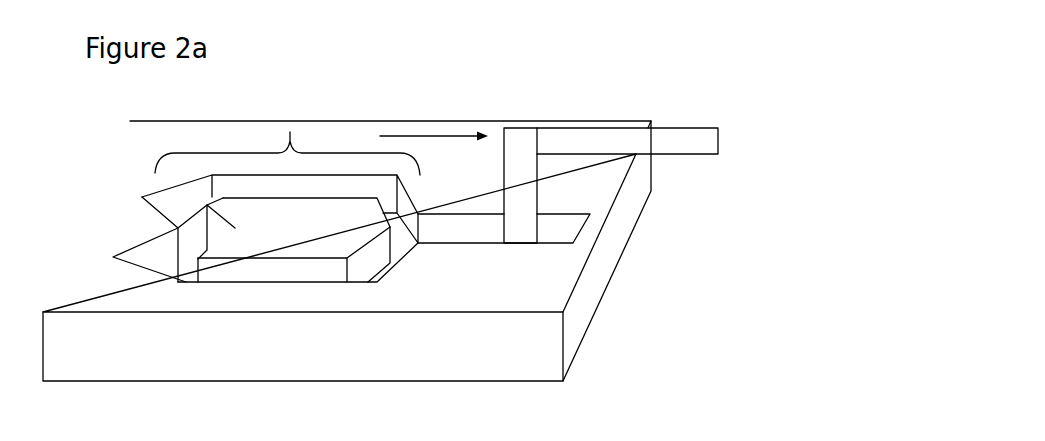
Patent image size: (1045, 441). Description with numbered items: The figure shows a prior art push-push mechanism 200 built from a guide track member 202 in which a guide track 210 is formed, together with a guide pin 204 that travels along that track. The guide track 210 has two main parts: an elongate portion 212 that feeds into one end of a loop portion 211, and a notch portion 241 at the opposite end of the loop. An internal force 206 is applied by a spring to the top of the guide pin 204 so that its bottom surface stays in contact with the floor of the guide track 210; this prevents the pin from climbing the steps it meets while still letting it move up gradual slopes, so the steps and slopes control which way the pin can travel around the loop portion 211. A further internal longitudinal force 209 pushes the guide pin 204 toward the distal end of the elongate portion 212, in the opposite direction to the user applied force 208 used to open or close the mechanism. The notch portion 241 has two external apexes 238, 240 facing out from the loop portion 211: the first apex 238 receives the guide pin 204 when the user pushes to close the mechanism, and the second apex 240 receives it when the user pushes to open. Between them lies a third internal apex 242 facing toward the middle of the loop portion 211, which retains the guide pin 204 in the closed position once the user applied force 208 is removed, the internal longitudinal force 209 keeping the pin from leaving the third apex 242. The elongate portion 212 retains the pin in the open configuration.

The push-push mechanism 200 is at (572, 90).
The guide track member 202 is at (607, 288).
The guide pin 204 is at (683, 145).
The internal force 206 is at (685, 104).
The user applied force 208 is at (825, 140).
The internal longitudinal force 209 is at (420, 135).
The guide track 210 is at (312, 268).
The loop portion 211 is at (290, 130).
The elongate portion 212 is at (462, 227).
The first external apex 238 is at (134, 195).
The second external apex 240 is at (102, 262).
The notch portion 241 is at (137, 215).
The third internal apex 242 is at (241, 230).